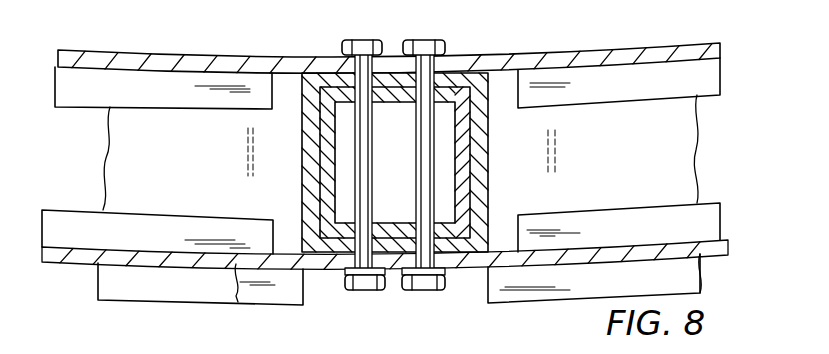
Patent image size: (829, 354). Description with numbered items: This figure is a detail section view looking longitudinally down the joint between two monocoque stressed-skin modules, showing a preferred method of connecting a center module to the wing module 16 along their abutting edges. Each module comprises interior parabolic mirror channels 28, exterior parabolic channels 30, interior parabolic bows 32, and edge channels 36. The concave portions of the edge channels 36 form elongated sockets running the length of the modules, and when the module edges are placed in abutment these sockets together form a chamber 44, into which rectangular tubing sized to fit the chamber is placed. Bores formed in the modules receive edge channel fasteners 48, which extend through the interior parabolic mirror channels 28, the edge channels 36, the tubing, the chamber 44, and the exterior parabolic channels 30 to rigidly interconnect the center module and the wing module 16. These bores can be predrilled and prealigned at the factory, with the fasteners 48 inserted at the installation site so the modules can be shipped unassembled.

The wing module 16 is at (716, 152).
The interior parabolic mirror channel 28 is at (214, 70).
The exterior parabolic channel 30 is at (238, 302).
The interior parabolic bow 32 is at (190, 168).
The edge channel 36 is at (312, 243).
The chamber 44 is at (397, 187).
The edge channel fastener 48 is at (399, 40).